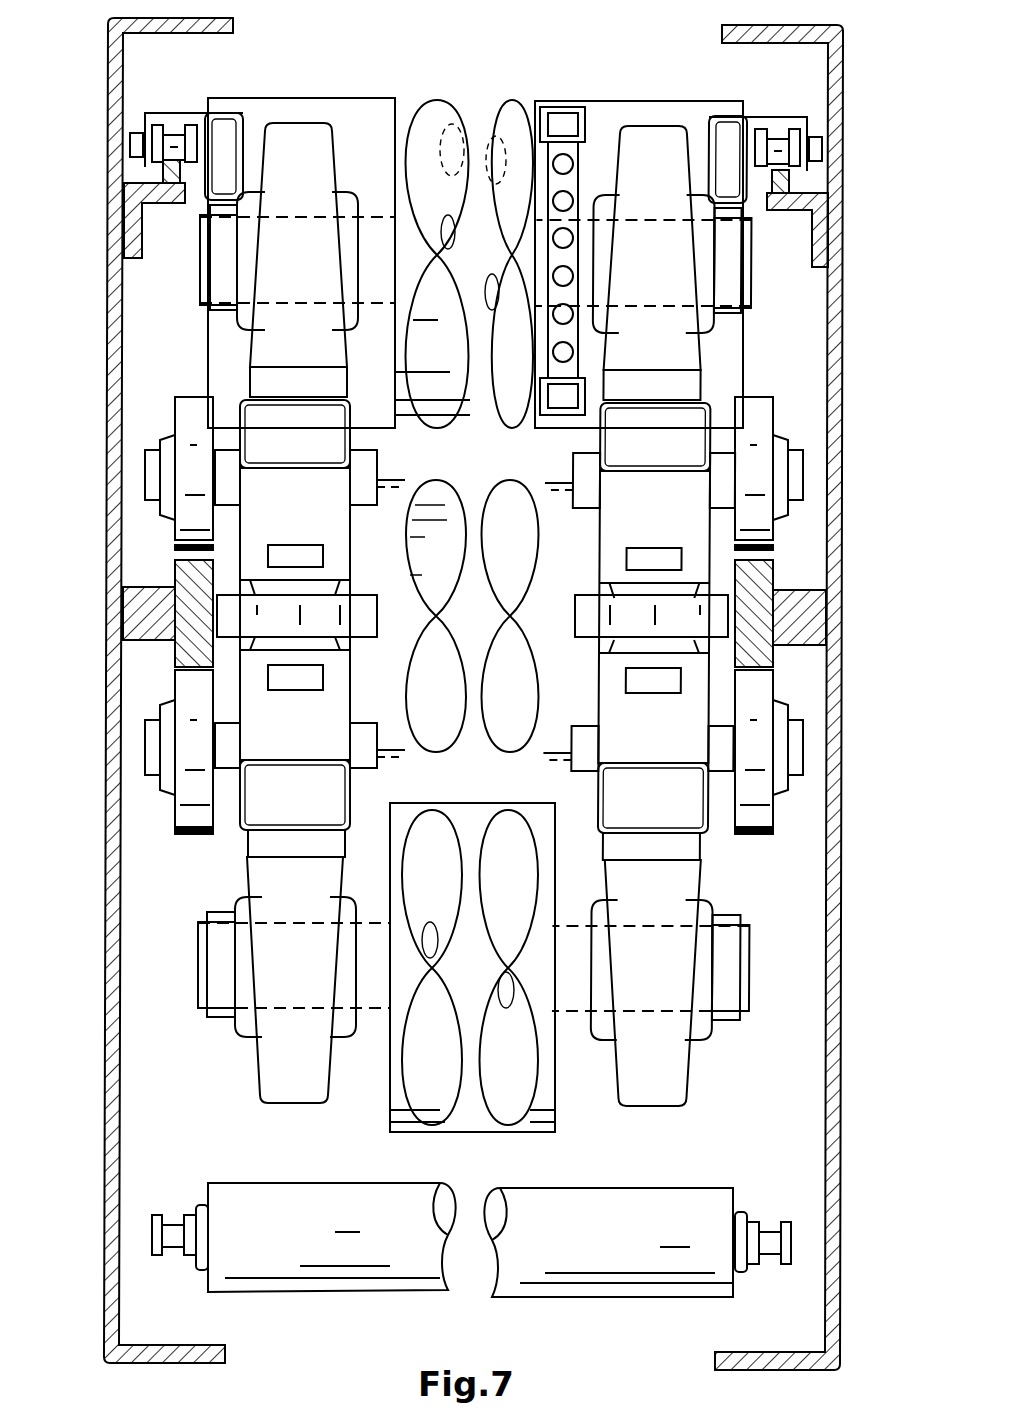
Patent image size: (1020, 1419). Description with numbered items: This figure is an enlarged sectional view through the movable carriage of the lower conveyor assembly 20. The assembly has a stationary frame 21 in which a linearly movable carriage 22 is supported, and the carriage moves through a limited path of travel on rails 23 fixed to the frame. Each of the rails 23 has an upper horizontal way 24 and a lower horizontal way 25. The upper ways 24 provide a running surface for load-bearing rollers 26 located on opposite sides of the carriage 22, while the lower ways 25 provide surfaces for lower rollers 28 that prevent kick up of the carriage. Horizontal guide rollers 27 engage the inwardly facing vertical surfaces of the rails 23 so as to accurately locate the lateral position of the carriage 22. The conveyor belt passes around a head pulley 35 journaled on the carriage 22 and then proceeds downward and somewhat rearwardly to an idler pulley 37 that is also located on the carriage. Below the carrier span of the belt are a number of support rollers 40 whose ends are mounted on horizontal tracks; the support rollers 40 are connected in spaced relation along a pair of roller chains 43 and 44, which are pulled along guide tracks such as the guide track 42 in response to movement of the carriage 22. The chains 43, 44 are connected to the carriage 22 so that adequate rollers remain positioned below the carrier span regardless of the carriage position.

The lower conveyor assembly 20 is at (481, 58).
The stationary frame 21 is at (838, 640).
The linearly movable carriage 22 is at (298, 485).
The rails 23 is at (180, 650).
The upper ways 24 is at (182, 548).
The lower ways 25 is at (185, 673).
The load-bearing rollers 26 is at (178, 405).
The horizontal guide rollers 27 is at (372, 607).
The lower rollers 28 is at (175, 820).
The head pulley 35 is at (515, 100).
The idler pulley 37 is at (425, 1132).
The support rollers 40 is at (298, 110).
The guide track 42 is at (150, 185).
The roller chain 43 is at (168, 128).
The roller chain 44 is at (783, 132).